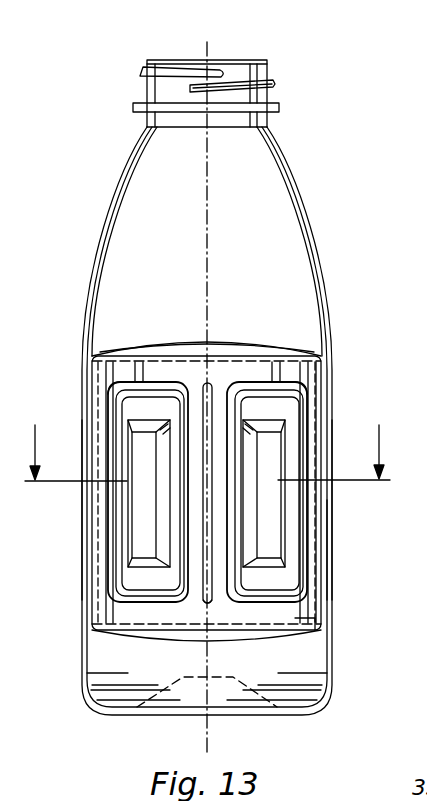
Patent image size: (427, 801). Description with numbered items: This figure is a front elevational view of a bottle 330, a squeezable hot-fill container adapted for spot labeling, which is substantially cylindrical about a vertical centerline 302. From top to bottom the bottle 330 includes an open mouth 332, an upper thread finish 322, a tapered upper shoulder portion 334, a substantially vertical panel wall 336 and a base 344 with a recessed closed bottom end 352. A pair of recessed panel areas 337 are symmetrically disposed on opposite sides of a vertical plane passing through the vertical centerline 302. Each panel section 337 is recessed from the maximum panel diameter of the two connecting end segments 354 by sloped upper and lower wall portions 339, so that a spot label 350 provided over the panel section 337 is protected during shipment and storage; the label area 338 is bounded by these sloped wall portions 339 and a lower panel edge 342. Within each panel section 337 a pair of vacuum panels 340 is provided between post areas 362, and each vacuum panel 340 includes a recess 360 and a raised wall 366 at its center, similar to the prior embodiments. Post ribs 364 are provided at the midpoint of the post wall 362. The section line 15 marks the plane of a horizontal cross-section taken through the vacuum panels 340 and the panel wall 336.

The vertical centerline 302 is at (209, 52).
The bottle 330 is at (94, 227).
The open mouth 332 is at (183, 60).
The upper thread finish 322 is at (147, 92).
The tapered upper shoulder portion 334 is at (113, 173).
The label panel 338 is at (292, 356).
The sloped upper and lower wall portions 339 is at (258, 346).
The spot label 350 is at (130, 359).
The vacuum panel 340 is at (120, 531).
The raised wall 366 is at (138, 500).
The recess 360 is at (134, 407).
The recessed panel area 337 is at (300, 369).
The post area 362 is at (193, 385).
The post rib 364 is at (214, 601).
The lower panel corner 342 is at (306, 622).
The connecting end segment 354 is at (83, 569).
The substantially vertical panel wall 336 is at (335, 547).
The base 344 is at (330, 688).
The recessed closed bottom end 352 is at (258, 702).
The section line 15- 15 is at (211, 436).